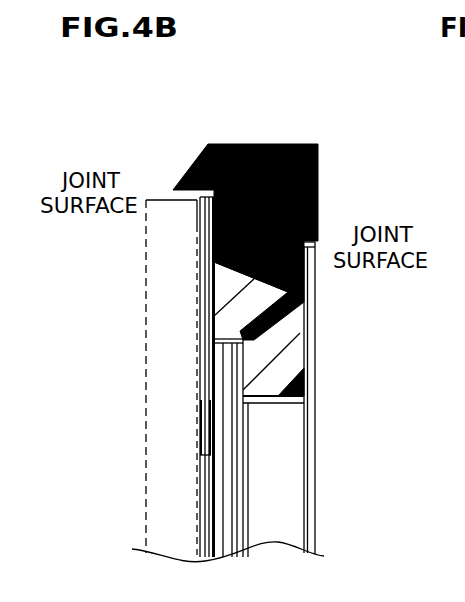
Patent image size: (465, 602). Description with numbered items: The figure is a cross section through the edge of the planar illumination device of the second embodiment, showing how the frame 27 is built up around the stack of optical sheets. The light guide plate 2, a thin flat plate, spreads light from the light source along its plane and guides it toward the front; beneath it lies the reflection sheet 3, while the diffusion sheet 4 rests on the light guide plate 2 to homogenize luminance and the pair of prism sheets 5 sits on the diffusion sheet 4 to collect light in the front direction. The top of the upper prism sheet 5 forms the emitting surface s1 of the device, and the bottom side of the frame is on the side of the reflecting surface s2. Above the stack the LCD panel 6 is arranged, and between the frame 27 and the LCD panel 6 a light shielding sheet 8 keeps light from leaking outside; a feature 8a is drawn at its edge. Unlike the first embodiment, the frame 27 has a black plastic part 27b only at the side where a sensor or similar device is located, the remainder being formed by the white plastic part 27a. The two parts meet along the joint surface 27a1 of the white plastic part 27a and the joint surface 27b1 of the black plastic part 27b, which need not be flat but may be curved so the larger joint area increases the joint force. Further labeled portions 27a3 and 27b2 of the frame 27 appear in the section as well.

The light guide plate 2 is at (283, 518).
The reflection sheet 3 is at (315, 425).
The diffusion sheet 4 is at (232, 515).
The prism sheets 5 is at (227, 442).
The LCD panel 6 is at (148, 349).
The light shielding sheet 8 is at (240, 265).
The end portion of welded portion 8a is at (206, 456).
The frame 27 is at (231, 223).
The white plastic part 27a is at (227, 339).
The joint surface of white plastic part 27a1 is at (264, 283).
The step portion of body portion 27a3 is at (226, 342).
The black plastic part 27b is at (236, 242).
The joint surface of black plastic part 27b1 is at (213, 272).
The outer joint surface of flange 27b2 is at (313, 246).
The emitting surface s1 is at (213, 540).
The reflecting surface s2 is at (312, 466).